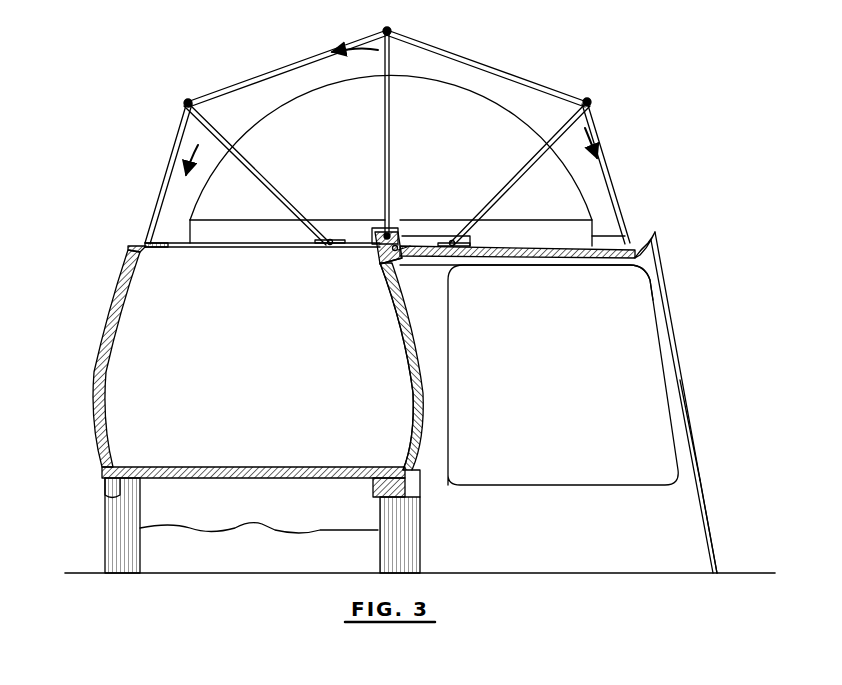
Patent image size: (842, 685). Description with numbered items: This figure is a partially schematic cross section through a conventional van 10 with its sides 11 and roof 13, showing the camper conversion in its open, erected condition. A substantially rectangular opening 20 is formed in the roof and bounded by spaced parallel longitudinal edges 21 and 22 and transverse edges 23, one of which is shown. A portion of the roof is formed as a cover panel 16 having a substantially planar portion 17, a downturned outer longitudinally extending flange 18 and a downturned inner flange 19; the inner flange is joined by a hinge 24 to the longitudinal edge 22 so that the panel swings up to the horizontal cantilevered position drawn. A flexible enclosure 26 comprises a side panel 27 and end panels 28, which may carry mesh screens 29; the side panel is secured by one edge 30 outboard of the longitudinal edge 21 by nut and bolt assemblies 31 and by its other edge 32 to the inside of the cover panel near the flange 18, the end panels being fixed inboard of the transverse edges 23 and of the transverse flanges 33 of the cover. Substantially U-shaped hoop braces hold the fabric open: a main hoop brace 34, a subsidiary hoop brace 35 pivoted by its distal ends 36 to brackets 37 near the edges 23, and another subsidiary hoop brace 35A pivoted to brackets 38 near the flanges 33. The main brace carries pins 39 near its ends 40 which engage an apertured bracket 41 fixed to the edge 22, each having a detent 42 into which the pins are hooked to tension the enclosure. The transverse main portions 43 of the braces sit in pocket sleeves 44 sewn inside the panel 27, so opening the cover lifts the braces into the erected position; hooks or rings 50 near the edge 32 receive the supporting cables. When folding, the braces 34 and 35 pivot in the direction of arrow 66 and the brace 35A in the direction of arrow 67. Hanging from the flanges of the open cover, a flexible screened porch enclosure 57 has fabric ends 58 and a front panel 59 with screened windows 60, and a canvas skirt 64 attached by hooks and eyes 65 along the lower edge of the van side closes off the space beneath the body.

The van 10 is at (97, 470).
The sides 11 is at (96, 375).
The roof 13 is at (128, 248).
The cover panel 16 is at (452, 295).
The substantially planar portion 17 is at (540, 262).
The downturned outer longitudinally extending flange 18 is at (652, 250).
The downturned longitudinally extending inner flange 19 is at (400, 260).
The substantially rectangular opening 20 is at (220, 247).
The longitudinal edge 21 is at (168, 232).
The longitudinal edge 22 is at (385, 265).
The transverse edges 23 is at (250, 245).
The hinge 24 is at (410, 246).
The flexible enclosure 26 is at (140, 160).
The side panel 27 is at (150, 195).
The end panels 28 is at (275, 78).
The mesh screens 29 is at (490, 110).
The edge 30 is at (143, 233).
The nut and bolt assemblies 31 is at (150, 250).
The edge 32 is at (650, 230).
The transverse flanges 33 is at (545, 250).
The main hoop brace 34 is at (395, 130).
The subsidiary hoop brace 35 is at (265, 170).
The subsidiary hoop brace 35A is at (525, 152).
The distal ends 36 is at (318, 246).
The brackets 37 is at (338, 246).
The brackets 38 is at (458, 246).
The pins 39 is at (370, 225).
The ends 40 is at (392, 225).
The apertured bracket 41 is at (375, 248).
The detent 42 is at (400, 240).
The transverse main portions 43 is at (188, 98).
The pocket sleeves 44 is at (200, 105).
The hooks or rings 50 is at (608, 222).
The flexible screened porch enclosure 57 is at (435, 358).
The ends 58 is at (703, 547).
The front panel 59 is at (690, 400).
The screened windows 60 is at (560, 470).
The canvas skirt 64 is at (422, 540).
The hooks and eyes 65 is at (425, 470).
The arrow 66 is at (370, 50).
The arrow 67 is at (200, 160).